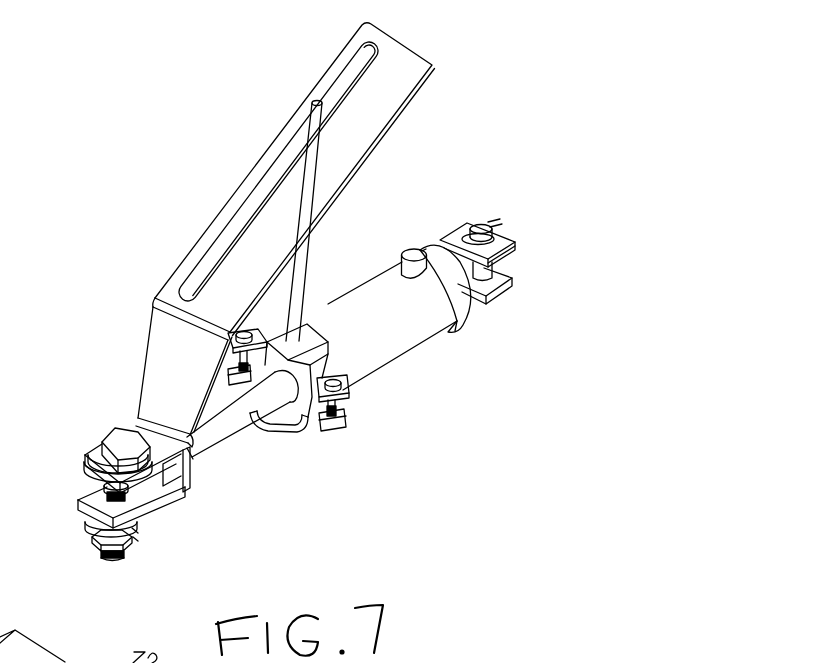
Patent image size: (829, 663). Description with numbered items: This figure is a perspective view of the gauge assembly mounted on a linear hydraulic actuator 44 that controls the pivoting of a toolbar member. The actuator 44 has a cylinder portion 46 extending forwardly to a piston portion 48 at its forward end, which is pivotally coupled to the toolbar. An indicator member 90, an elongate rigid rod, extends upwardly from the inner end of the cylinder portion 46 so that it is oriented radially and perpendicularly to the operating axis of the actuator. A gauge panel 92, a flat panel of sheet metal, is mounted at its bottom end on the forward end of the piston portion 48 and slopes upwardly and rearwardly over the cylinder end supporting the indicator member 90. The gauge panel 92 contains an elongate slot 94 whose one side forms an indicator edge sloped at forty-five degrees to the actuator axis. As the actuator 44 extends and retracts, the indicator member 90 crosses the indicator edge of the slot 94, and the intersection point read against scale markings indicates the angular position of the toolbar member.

The linear hydraulic actuator 44 is at (377, 393).
The cylinder portion 46 is at (400, 332).
The piston portion 48 is at (213, 432).
The indicator member 90 is at (305, 268).
The gauge panel 92 is at (213, 219).
The elongate slot 94 is at (345, 103).